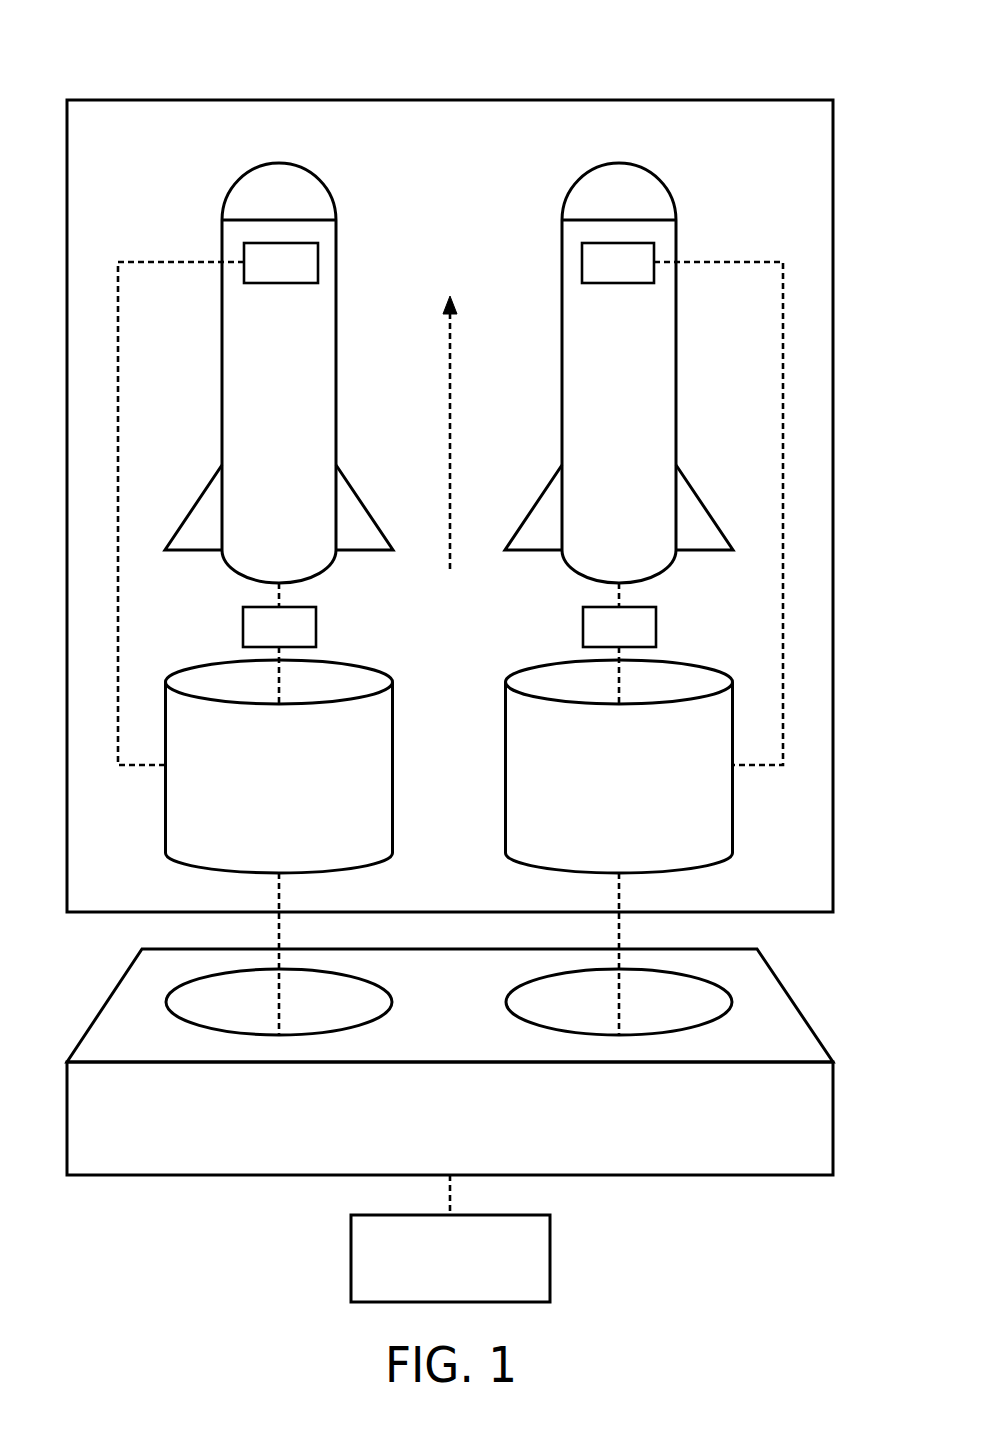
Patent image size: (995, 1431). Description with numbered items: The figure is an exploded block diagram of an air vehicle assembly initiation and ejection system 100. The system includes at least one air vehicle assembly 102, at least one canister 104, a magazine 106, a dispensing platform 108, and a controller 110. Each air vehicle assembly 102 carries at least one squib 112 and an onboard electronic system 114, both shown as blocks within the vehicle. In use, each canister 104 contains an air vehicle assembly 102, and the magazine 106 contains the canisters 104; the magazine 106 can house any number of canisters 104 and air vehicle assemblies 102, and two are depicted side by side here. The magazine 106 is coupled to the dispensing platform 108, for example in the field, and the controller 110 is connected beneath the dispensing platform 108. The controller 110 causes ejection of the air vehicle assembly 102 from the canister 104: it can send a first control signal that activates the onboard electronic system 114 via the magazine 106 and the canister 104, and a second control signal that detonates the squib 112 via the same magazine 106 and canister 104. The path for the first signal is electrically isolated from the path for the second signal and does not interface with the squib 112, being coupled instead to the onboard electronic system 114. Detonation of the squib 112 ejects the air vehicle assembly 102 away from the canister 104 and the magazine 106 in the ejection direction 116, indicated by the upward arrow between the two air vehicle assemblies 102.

The air vehicle assembly initiation and ejection system 100 is at (823, 55).
The air vehicle assembly 102 is at (638, 442).
The canister 104 is at (638, 796).
The magazine 106 is at (432, 157).
The dispensing platform 108 is at (471, 1149).
The controller 110 is at (430, 1289).
The squib 112 is at (258, 641).
The onboard electronic system 114 is at (260, 277).
The ejection direction 116 is at (432, 292).